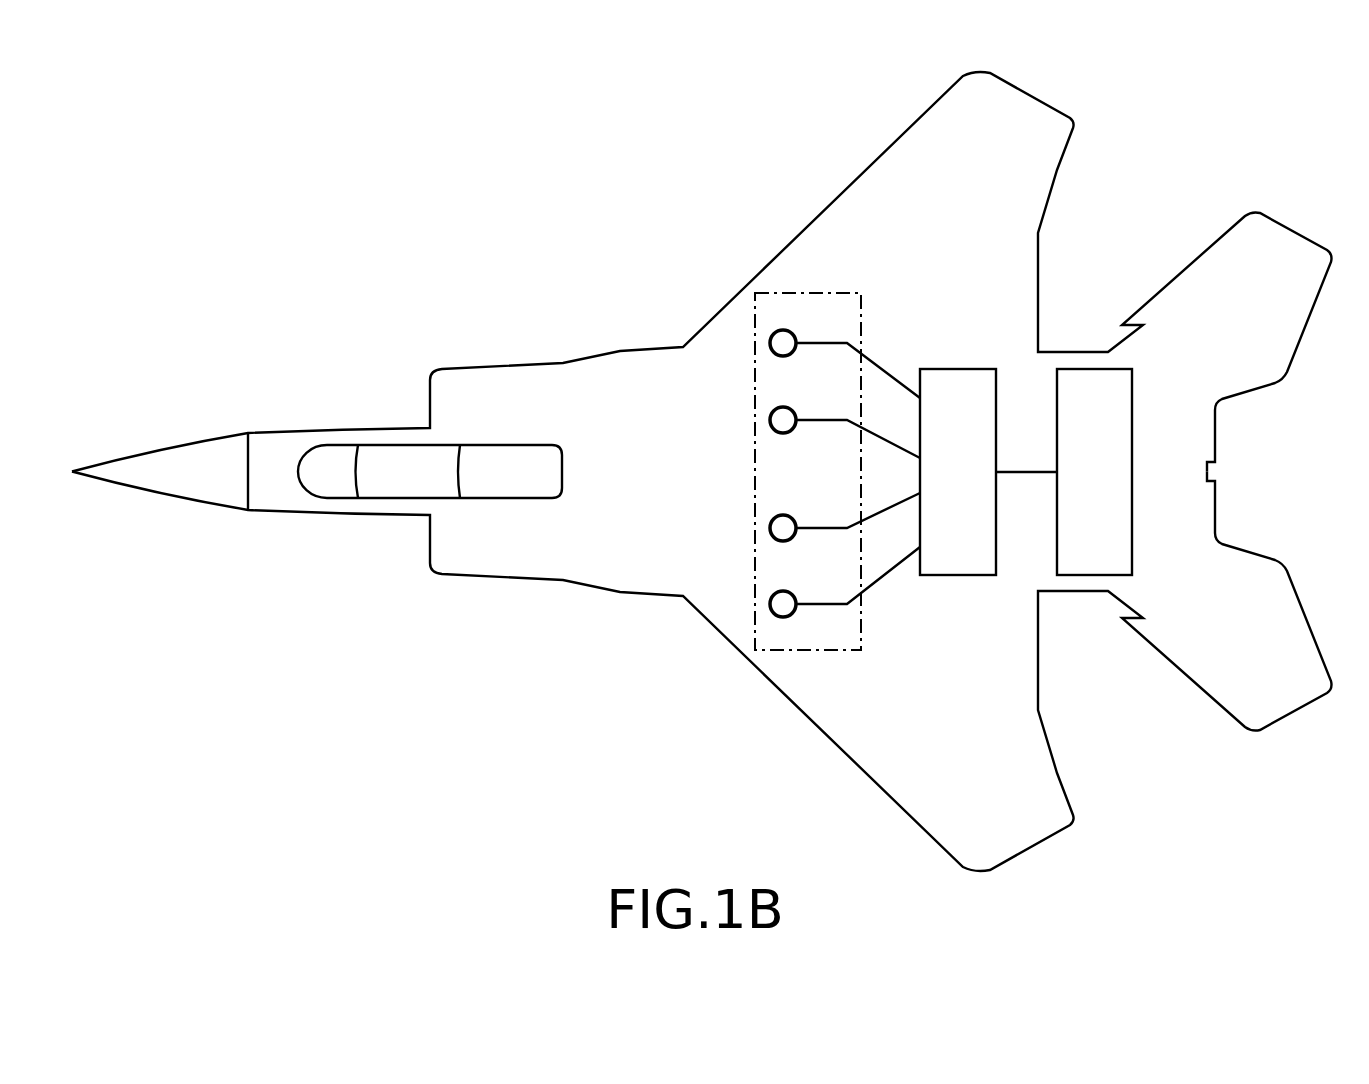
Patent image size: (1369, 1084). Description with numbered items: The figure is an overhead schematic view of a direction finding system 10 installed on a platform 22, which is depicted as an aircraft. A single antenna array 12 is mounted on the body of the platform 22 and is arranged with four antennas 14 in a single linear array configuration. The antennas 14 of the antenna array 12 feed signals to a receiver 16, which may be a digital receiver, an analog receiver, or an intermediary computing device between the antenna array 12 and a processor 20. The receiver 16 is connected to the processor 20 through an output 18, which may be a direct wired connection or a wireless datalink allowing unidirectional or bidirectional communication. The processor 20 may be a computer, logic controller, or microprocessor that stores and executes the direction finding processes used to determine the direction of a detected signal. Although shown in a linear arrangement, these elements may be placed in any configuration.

The direction finding system 10 is at (1145, 196).
The antenna array 12 is at (728, 349).
The antenna 14 is at (770, 420).
The receiver 16 is at (941, 487).
The output 18 is at (1028, 470).
The processor 20 is at (1077, 487).
The platform 22 is at (846, 772).